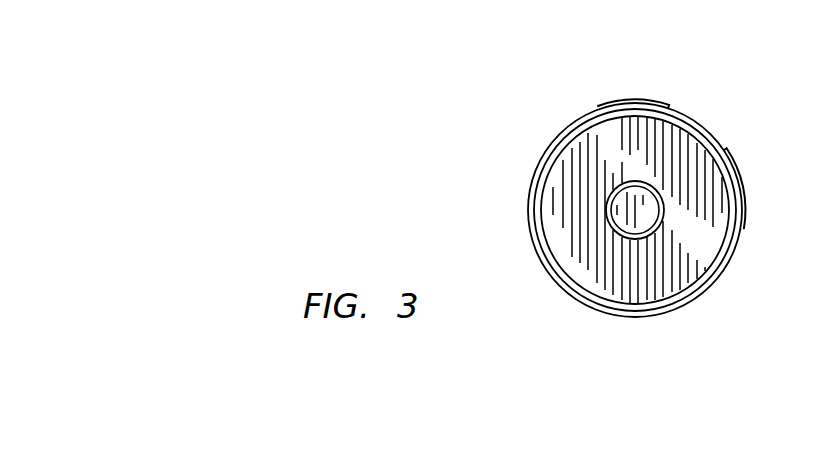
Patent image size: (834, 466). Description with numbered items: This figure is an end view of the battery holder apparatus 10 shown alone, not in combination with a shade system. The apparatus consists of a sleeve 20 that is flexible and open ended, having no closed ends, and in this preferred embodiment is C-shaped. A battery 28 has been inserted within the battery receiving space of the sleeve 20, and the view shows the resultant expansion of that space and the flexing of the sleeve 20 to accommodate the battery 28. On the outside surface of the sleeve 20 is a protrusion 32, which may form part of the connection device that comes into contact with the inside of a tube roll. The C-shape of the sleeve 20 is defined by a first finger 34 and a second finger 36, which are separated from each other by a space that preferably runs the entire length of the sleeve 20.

The battery holder apparatus 10 is at (489, 140).
The sleeve 20 is at (535, 245).
The battery 28 is at (678, 133).
The protrusion 32 is at (742, 223).
The first finger 34 is at (647, 103).
The second finger 36 is at (732, 162).